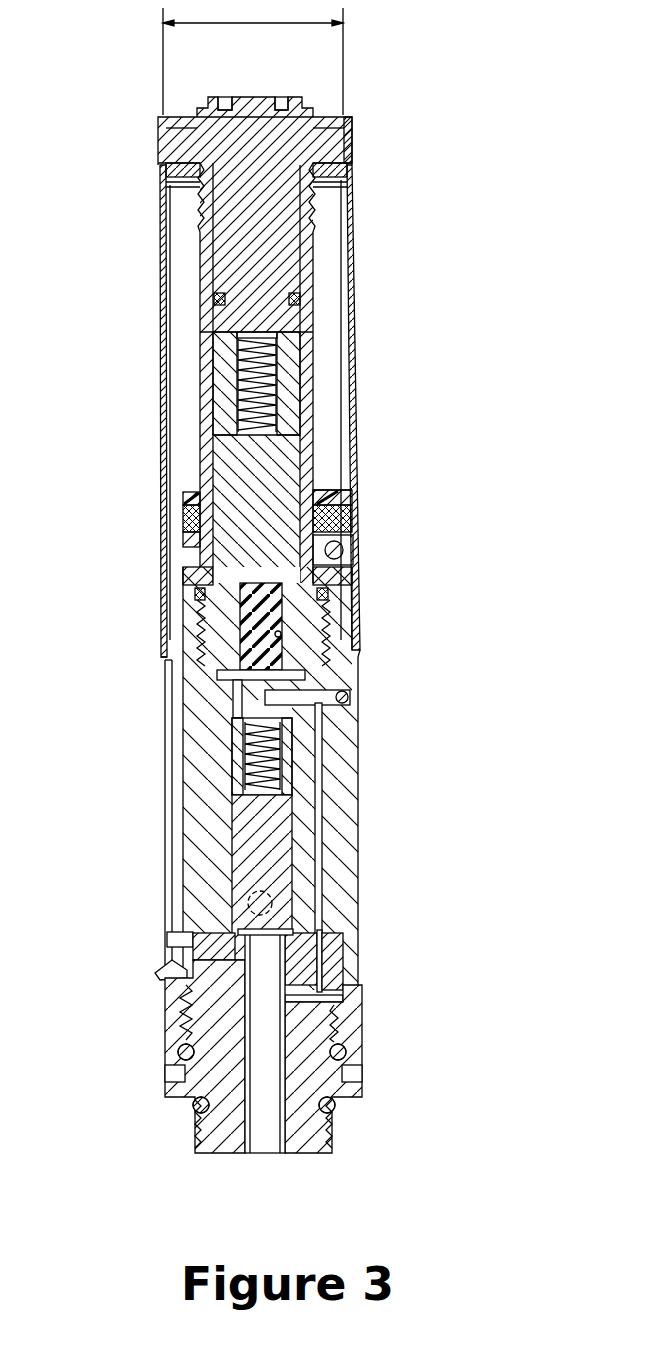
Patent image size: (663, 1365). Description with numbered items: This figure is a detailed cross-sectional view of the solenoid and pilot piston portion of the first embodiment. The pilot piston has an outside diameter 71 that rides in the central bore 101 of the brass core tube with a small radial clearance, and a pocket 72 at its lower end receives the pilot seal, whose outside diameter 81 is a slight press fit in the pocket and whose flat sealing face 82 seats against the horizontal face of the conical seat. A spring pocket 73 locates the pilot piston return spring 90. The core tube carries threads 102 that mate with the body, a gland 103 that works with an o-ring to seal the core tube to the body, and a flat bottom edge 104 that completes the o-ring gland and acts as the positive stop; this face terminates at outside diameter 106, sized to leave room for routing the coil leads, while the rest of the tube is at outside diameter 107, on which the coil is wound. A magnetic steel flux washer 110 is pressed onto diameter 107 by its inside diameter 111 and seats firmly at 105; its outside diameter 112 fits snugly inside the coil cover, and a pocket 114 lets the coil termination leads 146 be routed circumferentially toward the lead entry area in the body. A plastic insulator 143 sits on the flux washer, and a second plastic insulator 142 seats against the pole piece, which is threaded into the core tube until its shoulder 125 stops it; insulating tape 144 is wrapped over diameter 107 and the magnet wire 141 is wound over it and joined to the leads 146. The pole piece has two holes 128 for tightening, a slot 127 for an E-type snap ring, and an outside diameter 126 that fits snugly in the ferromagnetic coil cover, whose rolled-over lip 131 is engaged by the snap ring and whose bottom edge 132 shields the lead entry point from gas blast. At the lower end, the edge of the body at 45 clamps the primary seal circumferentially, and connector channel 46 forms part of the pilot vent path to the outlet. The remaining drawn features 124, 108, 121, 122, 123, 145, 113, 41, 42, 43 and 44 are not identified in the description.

The outside diameter of pole piece 126 is at (256, 20).
The slot 127 is at (199, 110).
The holes 128 is at (225, 106).
The lip 131 is at (321, 114).
The shoulder 125 is at (200, 157).
The seal ring 124 is at (193, 172).
The outer sleeve 108 is at (173, 210).
The inner tube 121 is at (200, 227).
The piston body 122 is at (213, 275).
The seal 123 is at (215, 297).
The outside diameter of core tube 107 is at (208, 377).
The plastic insulator 143 is at (200, 490).
The flux washer seat 105 is at (197, 480).
The coil termination leads 146 is at (187, 532).
The outside diameter 106 is at (197, 550).
The flat bottom edge 104 is at (183, 576).
The seal 145 is at (203, 593).
The gland 103 is at (168, 633).
The threads 102 is at (165, 670).
The outside diameter of seal 81 is at (220, 675).
The sealing face 82 is at (327, 702).
The plate 41 is at (197, 930).
The block 43 is at (220, 962).
The wedge 42 is at (193, 977).
The nut 44 is at (178, 1037).
The clamping edge of body 45 is at (285, 906).
The connector channel 46 is at (327, 975).
The second plastic insulator 142 is at (350, 163).
The magnet wire 141 is at (352, 215).
The insulating tape 144 is at (353, 238).
The pilot piston return spring 90 is at (300, 348).
The spring pocket 73 is at (295, 370).
The central bore 101 is at (335, 390).
The inside diameter of flux washer 111 is at (355, 460).
The flux washer 110 is at (350, 490).
The outside diameter of flux washer 112 is at (345, 512).
The pocket 114 is at (345, 545).
The O-ring 113 is at (345, 548).
The outside diameter of pilot piston 71 is at (330, 590).
The bottom edge of coil cover 132 is at (350, 612).
The pocket 72 is at (278, 634).